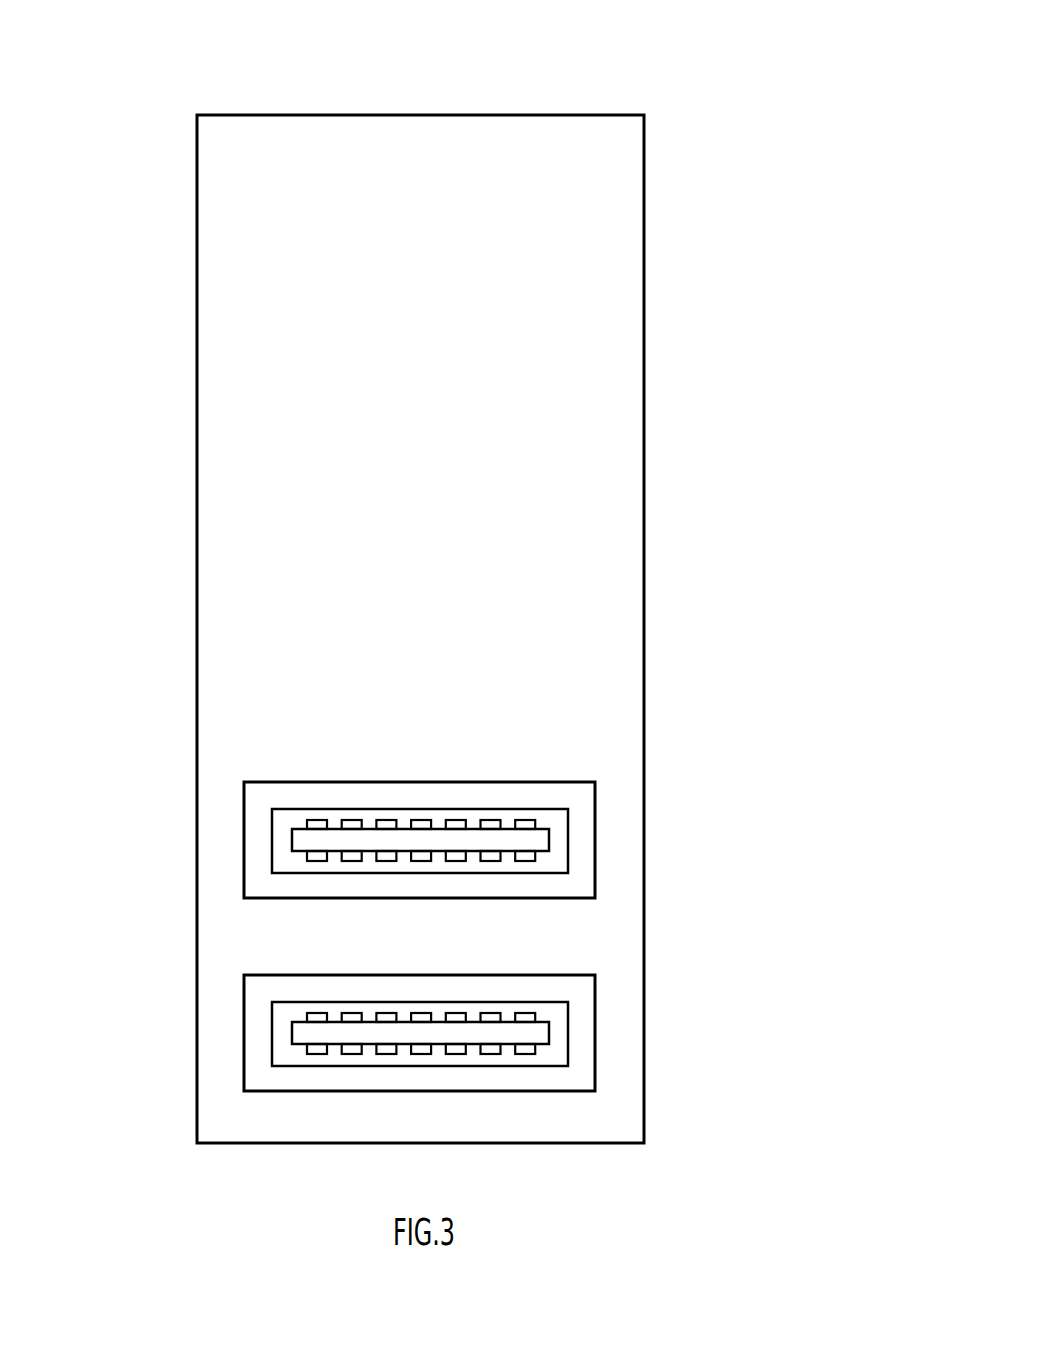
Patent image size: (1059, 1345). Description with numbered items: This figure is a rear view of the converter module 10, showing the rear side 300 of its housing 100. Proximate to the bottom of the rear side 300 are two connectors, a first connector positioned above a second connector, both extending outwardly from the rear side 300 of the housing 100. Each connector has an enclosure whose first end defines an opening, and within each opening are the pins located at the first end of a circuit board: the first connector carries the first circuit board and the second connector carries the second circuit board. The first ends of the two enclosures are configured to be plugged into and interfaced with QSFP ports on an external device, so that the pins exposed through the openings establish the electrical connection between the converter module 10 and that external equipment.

The converter module 10 is at (125, 70).
The housing 100 is at (163, 162).
The rear side 300 is at (218, 320).